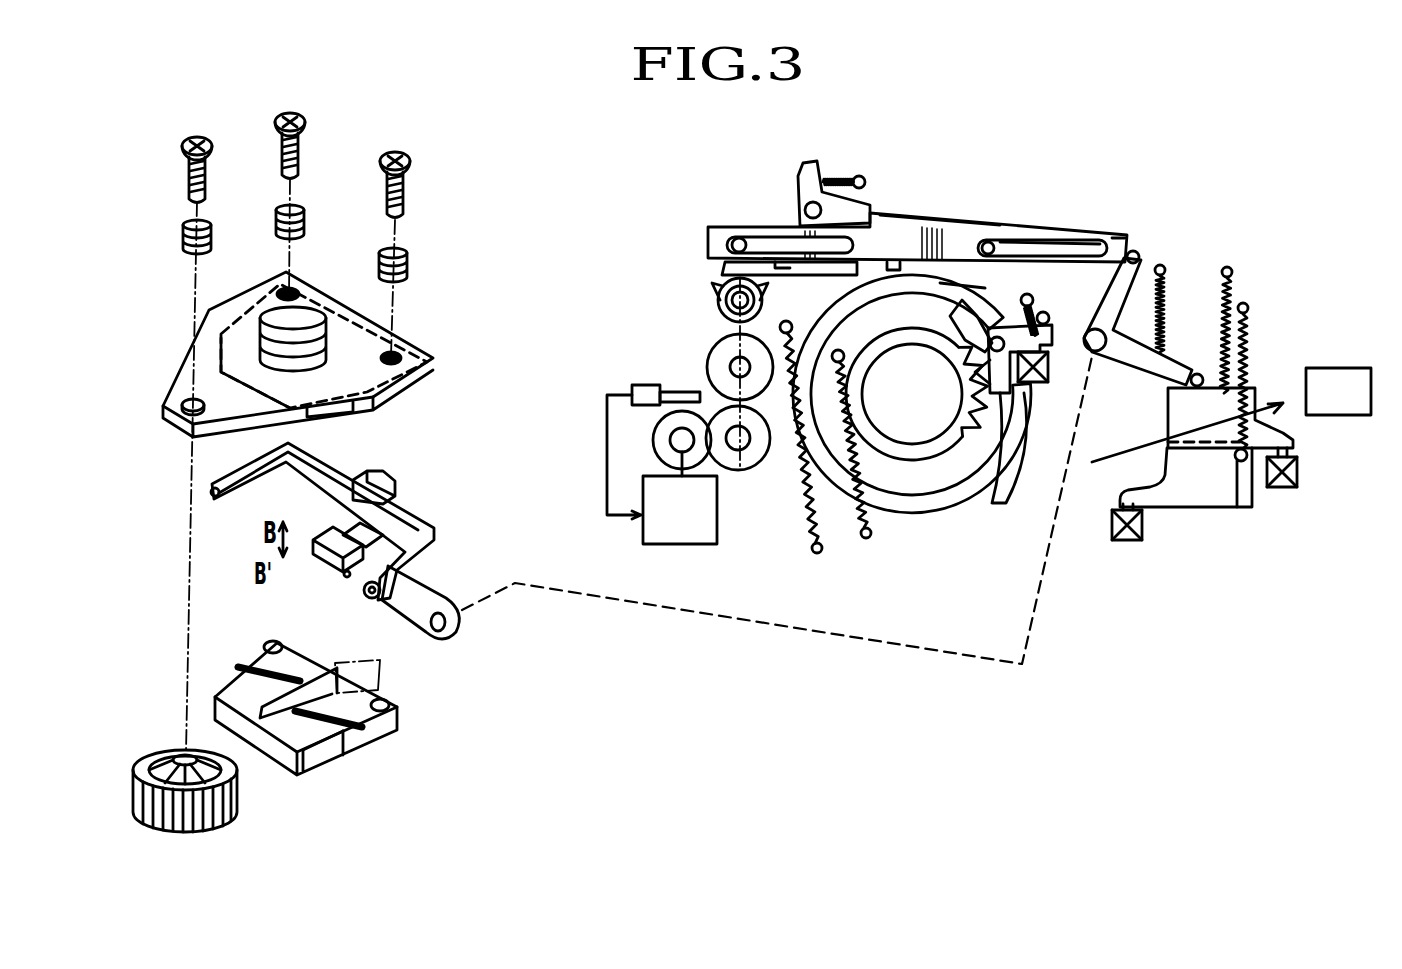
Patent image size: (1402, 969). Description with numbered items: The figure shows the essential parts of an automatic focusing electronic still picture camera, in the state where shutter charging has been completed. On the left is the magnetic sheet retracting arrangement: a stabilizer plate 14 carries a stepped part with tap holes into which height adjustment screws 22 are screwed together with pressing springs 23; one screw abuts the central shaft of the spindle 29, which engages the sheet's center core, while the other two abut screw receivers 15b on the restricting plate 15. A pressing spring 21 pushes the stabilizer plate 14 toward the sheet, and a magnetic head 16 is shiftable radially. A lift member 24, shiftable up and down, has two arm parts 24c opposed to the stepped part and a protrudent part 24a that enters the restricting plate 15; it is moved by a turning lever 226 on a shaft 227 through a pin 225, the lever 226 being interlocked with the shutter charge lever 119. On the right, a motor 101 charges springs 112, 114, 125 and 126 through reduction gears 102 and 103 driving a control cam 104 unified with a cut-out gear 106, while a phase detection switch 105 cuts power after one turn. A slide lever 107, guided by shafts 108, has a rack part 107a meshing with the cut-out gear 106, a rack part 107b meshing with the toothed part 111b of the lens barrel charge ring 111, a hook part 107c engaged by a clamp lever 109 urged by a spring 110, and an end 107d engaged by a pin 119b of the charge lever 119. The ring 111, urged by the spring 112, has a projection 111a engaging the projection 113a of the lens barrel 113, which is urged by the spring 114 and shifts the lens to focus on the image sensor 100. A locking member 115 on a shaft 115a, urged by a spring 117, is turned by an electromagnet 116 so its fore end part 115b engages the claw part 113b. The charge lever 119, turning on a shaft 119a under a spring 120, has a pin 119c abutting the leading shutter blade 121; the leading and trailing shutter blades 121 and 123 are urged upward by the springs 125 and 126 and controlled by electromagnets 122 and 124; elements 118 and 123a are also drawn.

The stabilizer plate 14 is at (210, 340).
The restricting plate 15 is at (320, 752).
The screw receivers 15b is at (270, 640).
The magnetic head 16 is at (290, 730).
The pressing spring 21 is at (308, 306).
The height adjustment screws 22 is at (184, 157).
The pressing springs 23 is at (183, 237).
The lift member 24 is at (376, 476).
The protrudent part 24a is at (323, 558).
The arm parts 24c is at (217, 496).
The spindle 29 is at (137, 797).
The image sensor 100 is at (1352, 367).
The motor 101 is at (681, 545).
The reduction gear 102 is at (657, 450).
The reduction gear 103 is at (740, 471).
The control cam 104 is at (712, 360).
The phase detection switch 105 is at (645, 385).
The cut-out gear 106 is at (718, 300).
The slide lever 107 is at (767, 228).
The rack part 107a is at (722, 268).
The rack part 107b is at (1033, 236).
The hook part 107c is at (893, 218).
The end of slide lever 107d is at (1136, 232).
The shafts 108 is at (736, 239).
The clamp lever 109 is at (806, 176).
The spring 110 is at (838, 180).
The lens barrel charge ring 111 is at (958, 506).
The projection 111a is at (950, 316).
The toothed part 111b is at (968, 276).
The spring 112 is at (808, 500).
The lens barrel 113 is at (942, 450).
The projection 113a is at (918, 346).
The claw part 113b is at (968, 413).
The spring 114 is at (860, 512).
The locking member 115 is at (1036, 380).
The shaft 115a is at (976, 371).
The fore end part 115b is at (1012, 455).
The electromagnet 116 is at (1048, 368).
The spring 117 is at (1034, 298).
The pin 118 is at (1050, 318).
The shutter charge lever 119 is at (1150, 368).
The shaft 119a is at (1096, 353).
The pin 119b is at (1141, 256).
The pin 119c is at (1195, 374).
The spring 120 is at (1166, 298).
The leading shutter blade 121 is at (1180, 418).
The electromagnet 122 is at (1300, 473).
The trailing shutter blade 123 is at (1193, 510).
The tab of shutter blade 123a is at (1242, 470).
The electromagnet 124 is at (1129, 542).
The spring 125 is at (1233, 276).
The spring 126 is at (1249, 312).
The pin 225 is at (371, 600).
The turning lever 226 is at (418, 592).
The shaft 227 is at (448, 623).